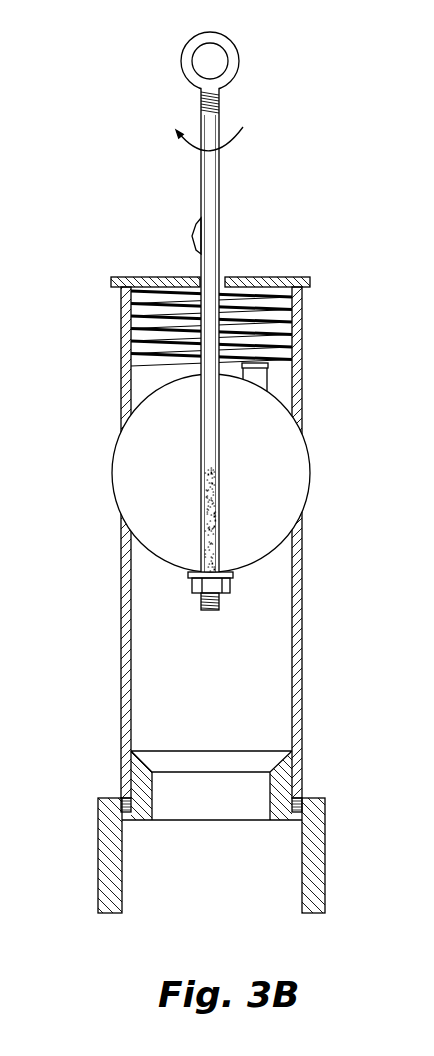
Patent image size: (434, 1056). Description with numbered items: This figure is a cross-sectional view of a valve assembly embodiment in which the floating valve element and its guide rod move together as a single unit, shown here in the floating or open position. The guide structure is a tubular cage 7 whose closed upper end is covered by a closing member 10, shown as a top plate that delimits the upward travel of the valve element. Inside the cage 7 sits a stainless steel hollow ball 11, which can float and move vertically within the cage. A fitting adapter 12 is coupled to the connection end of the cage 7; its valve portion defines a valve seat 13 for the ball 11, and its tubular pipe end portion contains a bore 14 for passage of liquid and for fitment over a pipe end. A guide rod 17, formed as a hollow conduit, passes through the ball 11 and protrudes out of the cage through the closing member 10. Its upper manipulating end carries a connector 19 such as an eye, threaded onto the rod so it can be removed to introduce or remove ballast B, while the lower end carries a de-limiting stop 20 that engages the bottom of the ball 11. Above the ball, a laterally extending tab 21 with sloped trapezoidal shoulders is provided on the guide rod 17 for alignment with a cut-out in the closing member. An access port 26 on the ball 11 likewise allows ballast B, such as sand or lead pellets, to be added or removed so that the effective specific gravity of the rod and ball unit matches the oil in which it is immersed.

The tubular cage 7 is at (121, 592).
The closing member 10 is at (263, 277).
The hollow ball 11 is at (310, 470).
The fitting adapter 12 is at (97, 855).
The valve seat 13 is at (247, 750).
The bore 14 is at (175, 873).
The guide rod 17 is at (303, 316).
The connector 19 is at (225, 58).
The de-limiting stop 20 is at (212, 585).
The laterally extending tab 21 is at (192, 236).
The access port 26 is at (257, 380).
The ballast B is at (203, 520).